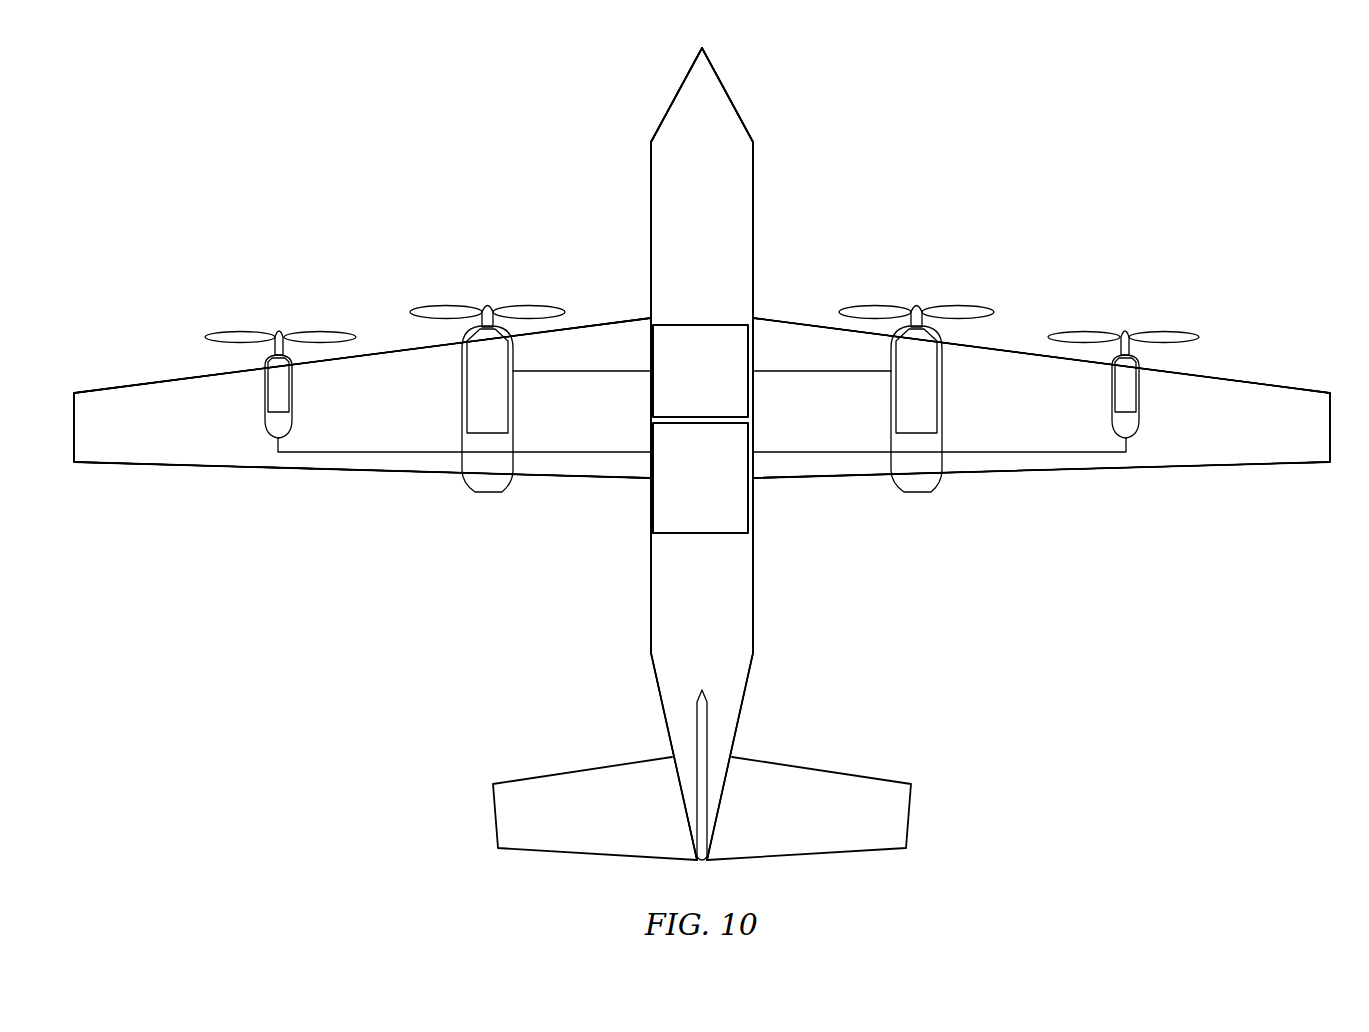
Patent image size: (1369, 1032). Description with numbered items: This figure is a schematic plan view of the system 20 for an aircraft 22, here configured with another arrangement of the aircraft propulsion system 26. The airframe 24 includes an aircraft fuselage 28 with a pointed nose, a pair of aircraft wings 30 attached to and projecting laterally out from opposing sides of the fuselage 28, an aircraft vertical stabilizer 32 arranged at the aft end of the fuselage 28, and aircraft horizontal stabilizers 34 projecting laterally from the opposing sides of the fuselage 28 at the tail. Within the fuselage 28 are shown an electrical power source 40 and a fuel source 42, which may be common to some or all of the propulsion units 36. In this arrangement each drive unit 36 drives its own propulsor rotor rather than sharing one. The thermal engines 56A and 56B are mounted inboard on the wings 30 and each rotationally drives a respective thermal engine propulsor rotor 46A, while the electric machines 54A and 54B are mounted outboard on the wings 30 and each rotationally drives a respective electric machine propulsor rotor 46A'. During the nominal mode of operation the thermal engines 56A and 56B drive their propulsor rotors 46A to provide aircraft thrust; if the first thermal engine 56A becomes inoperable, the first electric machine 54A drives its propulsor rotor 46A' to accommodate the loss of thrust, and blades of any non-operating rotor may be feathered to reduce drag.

The system 20 is at (1002, 94).
The aircraft 22 is at (702, 454).
The airframe 24 is at (745, 72).
The aircraft propulsion system 26 is at (996, 249).
The aircraft fuselage 28 is at (755, 160).
The aircraft wings 30 is at (160, 469).
The aircraft vertical stabilizer 32 is at (707, 732).
The aircraft horizontal stabilizers 34 is at (557, 772).
The propulsion unit 36 is at (260, 452).
The electrical power source 40 is at (717, 486).
The fuel source 42 is at (717, 387).
The thermal engine propulsor rotor 46A is at (702, 277).
The electric machine propulsor rotor 46A' is at (702, 304).
The first electric machine 54A is at (292, 405).
The second electric machine 54B is at (1112, 405).
The first thermal engine 56A is at (513, 415).
The second thermal engine 56B is at (891, 415).